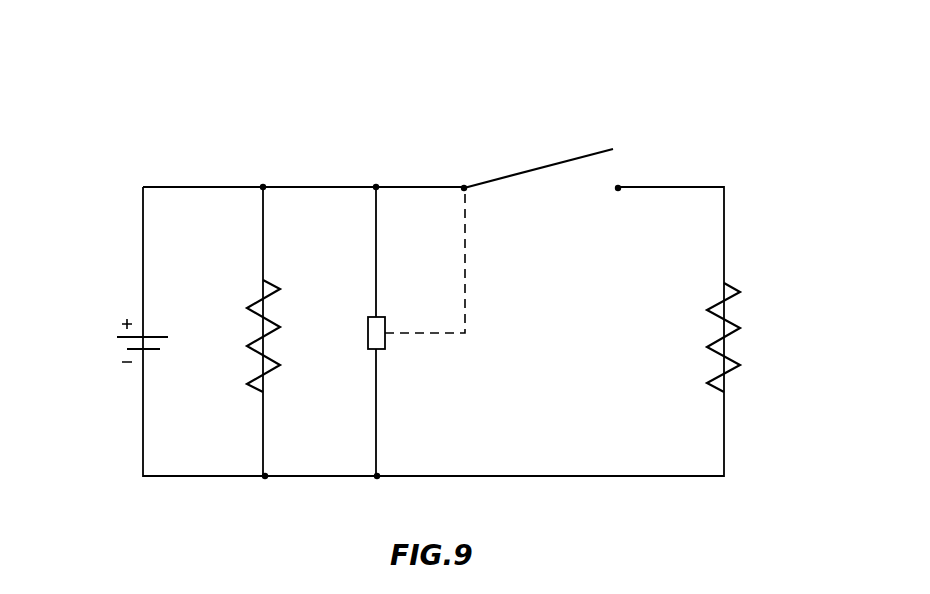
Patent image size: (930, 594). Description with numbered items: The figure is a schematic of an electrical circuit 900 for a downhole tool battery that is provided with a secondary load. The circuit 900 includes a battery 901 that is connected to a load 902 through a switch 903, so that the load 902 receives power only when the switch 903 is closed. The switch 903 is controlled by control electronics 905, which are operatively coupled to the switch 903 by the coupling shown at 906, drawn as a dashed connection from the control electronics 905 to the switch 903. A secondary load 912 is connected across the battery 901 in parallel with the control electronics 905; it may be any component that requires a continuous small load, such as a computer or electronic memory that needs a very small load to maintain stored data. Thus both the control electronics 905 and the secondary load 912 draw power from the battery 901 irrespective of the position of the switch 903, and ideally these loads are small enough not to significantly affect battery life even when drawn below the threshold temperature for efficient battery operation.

The circuit 900 is at (161, 130).
The battery 901 is at (117, 337).
The load 902 is at (730, 320).
The switch 903 is at (588, 153).
The control electronics 905 is at (385, 348).
The operative coupling 906 is at (466, 252).
The secondary load 912 is at (272, 283).